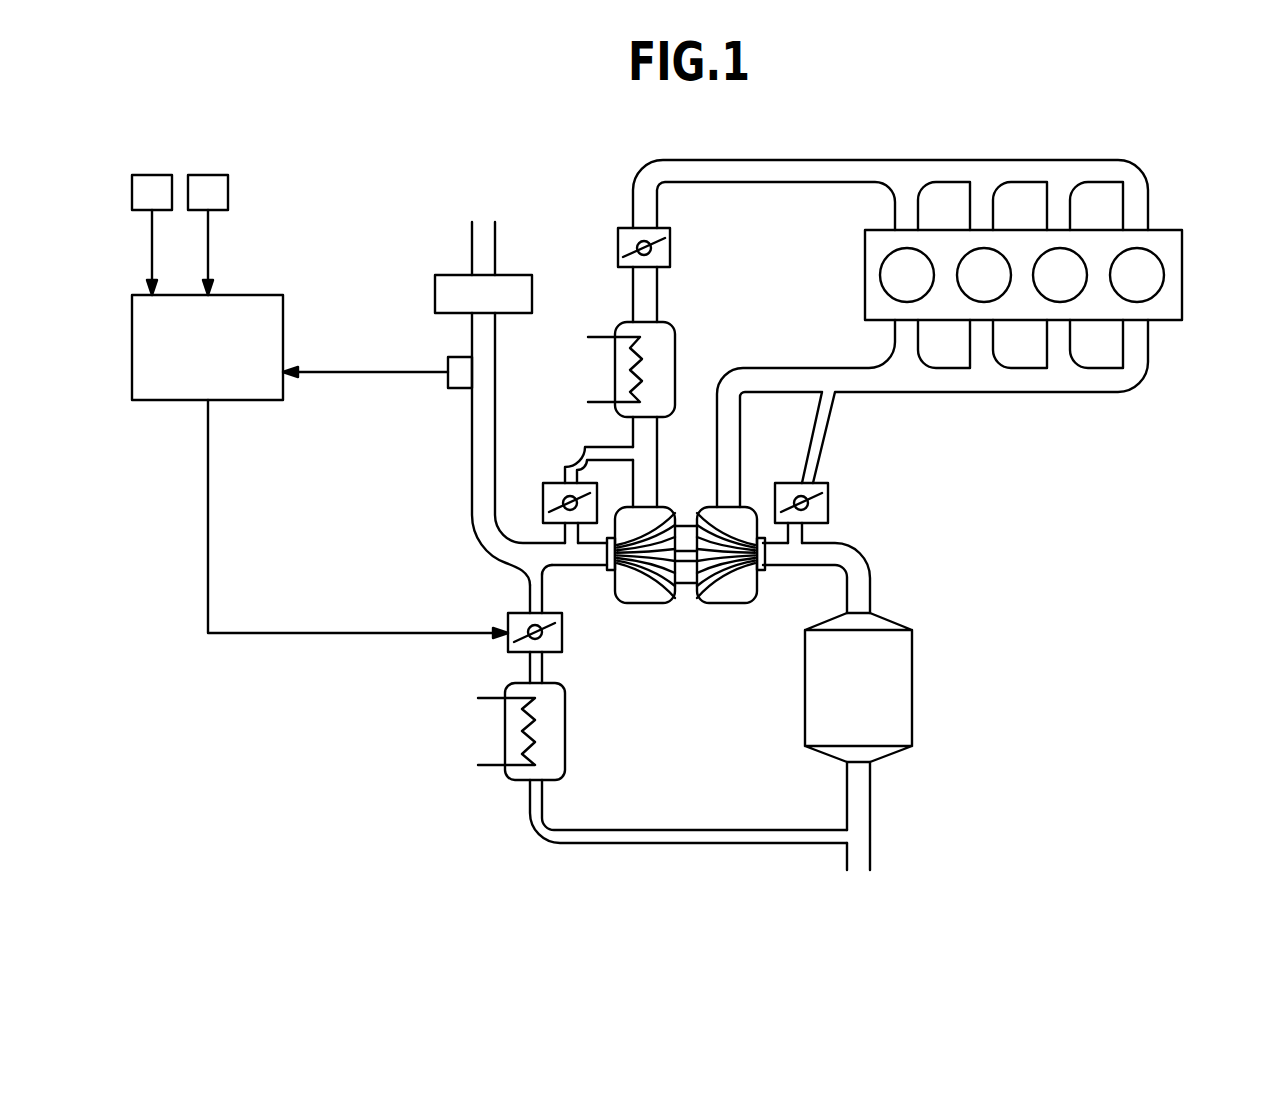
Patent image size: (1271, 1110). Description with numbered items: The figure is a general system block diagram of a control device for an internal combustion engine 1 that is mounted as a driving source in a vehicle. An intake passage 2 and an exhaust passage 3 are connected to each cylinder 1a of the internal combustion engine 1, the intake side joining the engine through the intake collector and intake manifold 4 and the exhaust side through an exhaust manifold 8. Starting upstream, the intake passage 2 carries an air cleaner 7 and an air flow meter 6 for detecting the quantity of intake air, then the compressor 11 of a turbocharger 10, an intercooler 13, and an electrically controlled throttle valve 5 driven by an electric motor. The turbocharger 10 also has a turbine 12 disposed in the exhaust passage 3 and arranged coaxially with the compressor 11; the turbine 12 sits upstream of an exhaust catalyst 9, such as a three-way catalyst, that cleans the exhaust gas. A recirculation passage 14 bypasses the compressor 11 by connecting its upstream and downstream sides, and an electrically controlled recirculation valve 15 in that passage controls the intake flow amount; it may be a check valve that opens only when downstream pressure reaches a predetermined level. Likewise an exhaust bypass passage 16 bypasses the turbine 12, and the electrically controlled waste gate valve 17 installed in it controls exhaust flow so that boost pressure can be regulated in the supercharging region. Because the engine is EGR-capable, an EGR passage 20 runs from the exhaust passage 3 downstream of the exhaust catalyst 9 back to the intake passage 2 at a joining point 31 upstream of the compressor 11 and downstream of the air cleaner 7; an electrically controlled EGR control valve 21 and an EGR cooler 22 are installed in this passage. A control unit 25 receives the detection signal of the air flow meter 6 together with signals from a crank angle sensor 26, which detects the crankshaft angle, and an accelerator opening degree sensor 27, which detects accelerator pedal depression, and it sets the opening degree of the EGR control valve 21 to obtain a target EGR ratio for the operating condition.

The internal combustion engine 1 is at (1066, 252).
The cylinder 1a is at (905, 258).
The intake passage 2 is at (489, 339).
The exhaust passage 3 is at (858, 590).
The intake collector and intake manifold 4 is at (1097, 161).
The throttle valve 5 is at (618, 246).
The air flow meter 6 is at (460, 390).
The air cleaner 7 is at (519, 275).
The exhaust manifold 8 is at (1081, 393).
The exhaust catalyst 9 is at (905, 680).
The turbocharger 10 is at (686, 533).
The compressor 11 is at (655, 597).
The turbine 12 is at (731, 597).
The intercooler 13 is at (675, 337).
The recirculation passage 14 is at (587, 443).
The recirculation valve 15 is at (553, 482).
The exhaust bypass passage 16 is at (798, 533).
The waste gate valve 17 is at (828, 495).
The EGR passage 20 is at (690, 830).
The EGR control valve 21 is at (562, 636).
The EGR cooler 22 is at (558, 736).
The control unit 25 is at (163, 402).
The crank angle sensor 26 is at (152, 235).
The accelerator opening degree sensor 27 is at (208, 235).
The joining point 31 is at (545, 557).